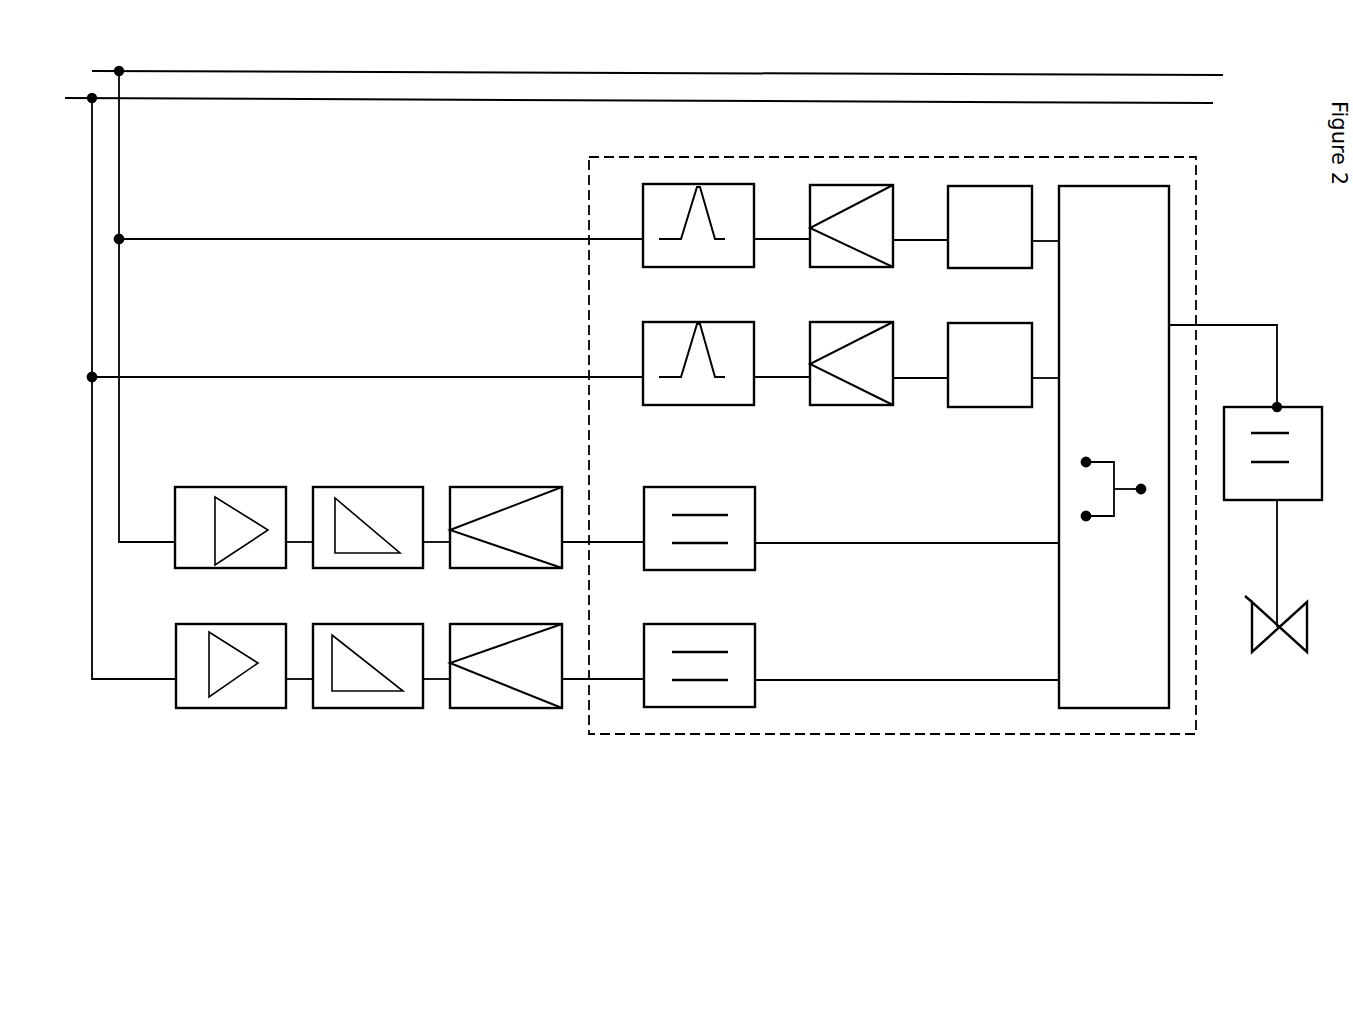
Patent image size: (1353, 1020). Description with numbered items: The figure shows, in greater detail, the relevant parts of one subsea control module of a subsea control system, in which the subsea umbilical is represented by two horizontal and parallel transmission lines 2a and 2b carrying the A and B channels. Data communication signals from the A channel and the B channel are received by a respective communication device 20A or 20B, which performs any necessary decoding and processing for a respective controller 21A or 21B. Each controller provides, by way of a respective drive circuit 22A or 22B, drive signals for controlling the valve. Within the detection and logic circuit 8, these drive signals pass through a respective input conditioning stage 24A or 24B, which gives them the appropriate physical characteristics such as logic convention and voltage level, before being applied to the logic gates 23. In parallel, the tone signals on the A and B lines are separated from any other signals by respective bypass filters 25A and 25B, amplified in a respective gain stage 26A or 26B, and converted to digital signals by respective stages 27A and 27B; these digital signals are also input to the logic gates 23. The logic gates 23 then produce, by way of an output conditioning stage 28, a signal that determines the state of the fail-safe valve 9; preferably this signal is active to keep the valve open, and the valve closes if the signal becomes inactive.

The transmission line 2a is at (1226, 80).
The transmission line 2b is at (1174, 104).
The detection and logic circuit 8 is at (900, 742).
The fail-safe valve 9 is at (1290, 638).
The communication device 20A is at (228, 487).
The communication device 20B is at (230, 708).
The controller 21A is at (367, 487).
The controller 21B is at (368, 708).
The drive circuit 22A is at (500, 487).
The drive circuit 22B is at (507, 708).
The logic gates 23 is at (1059, 586).
The input conditioning stage 24A is at (698, 487).
The input conditioning stage 24B is at (683, 707).
The bypass filter 25A is at (643, 183).
The bypass filter 25B is at (643, 338).
The gain stage 26A is at (810, 183).
The gain stage 26B is at (810, 323).
The analog-to-digital conversion stage 27A is at (959, 183).
The analog-to-digital conversion stage 27B is at (948, 323).
The output conditioning stage 28 is at (1303, 407).